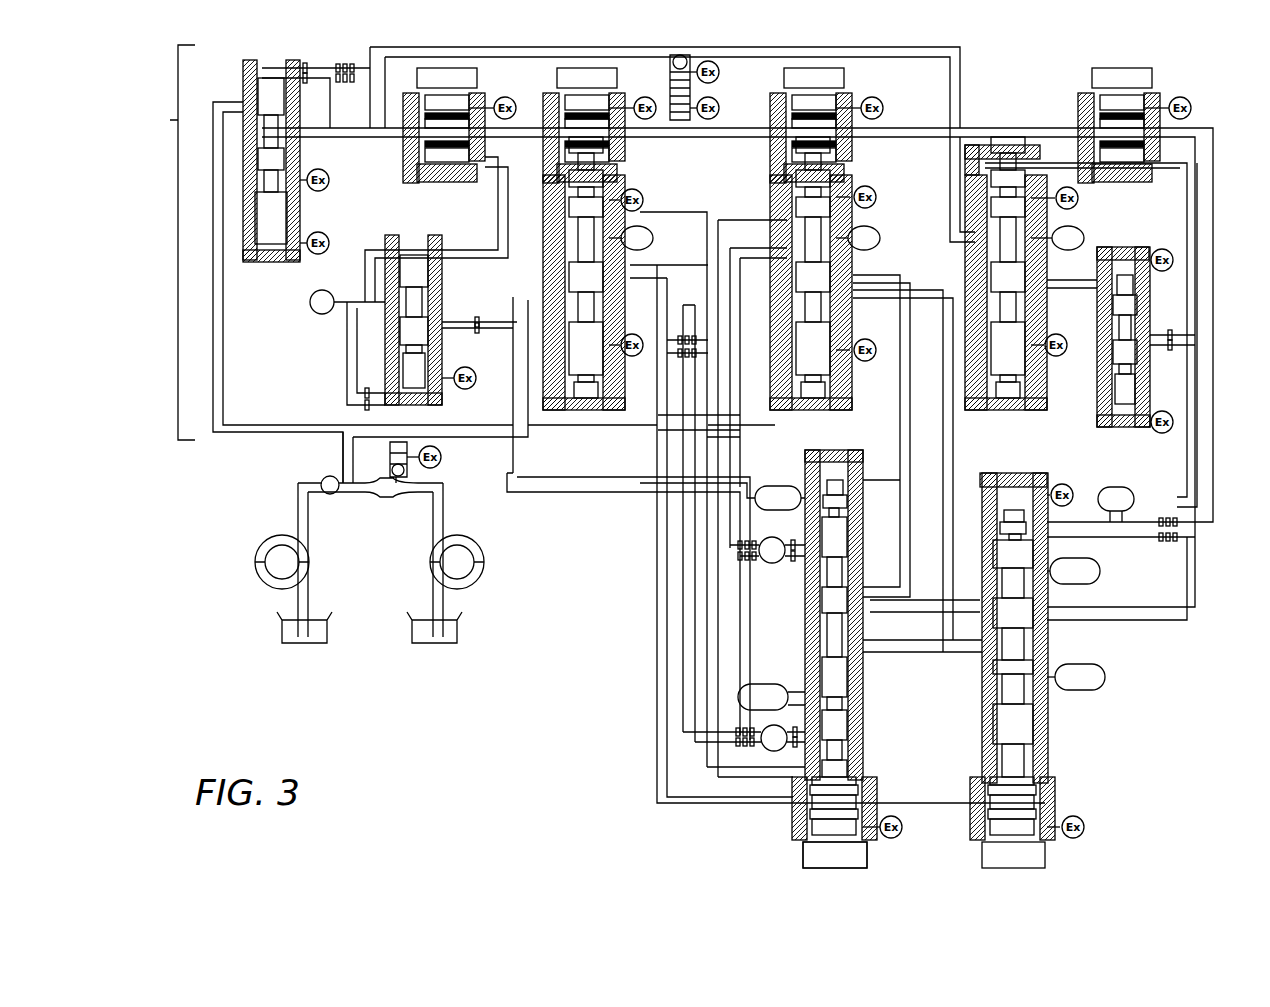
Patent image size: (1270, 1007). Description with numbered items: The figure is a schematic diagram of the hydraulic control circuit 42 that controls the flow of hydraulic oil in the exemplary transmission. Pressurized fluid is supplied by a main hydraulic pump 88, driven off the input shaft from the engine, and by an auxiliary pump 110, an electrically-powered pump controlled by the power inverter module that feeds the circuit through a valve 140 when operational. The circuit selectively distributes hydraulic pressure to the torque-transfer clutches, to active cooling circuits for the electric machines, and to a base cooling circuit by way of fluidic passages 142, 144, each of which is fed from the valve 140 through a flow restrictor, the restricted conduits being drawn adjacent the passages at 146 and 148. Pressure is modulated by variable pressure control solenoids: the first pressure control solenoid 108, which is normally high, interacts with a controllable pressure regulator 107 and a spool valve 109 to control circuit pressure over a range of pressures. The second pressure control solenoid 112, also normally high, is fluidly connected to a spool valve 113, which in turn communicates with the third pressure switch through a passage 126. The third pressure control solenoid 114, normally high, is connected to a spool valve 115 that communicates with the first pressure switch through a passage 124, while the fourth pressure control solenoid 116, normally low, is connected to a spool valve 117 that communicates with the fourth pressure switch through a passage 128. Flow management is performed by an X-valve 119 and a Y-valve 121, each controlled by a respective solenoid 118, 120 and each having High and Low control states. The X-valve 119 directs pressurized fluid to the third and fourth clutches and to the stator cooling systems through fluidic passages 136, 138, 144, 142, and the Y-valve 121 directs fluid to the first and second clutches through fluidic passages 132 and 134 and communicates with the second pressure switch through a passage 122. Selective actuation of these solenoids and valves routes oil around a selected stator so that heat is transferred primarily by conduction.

The hydraulic control circuit 42 is at (170, 120).
The main hydraulic pump 88 is at (465, 585).
The controllable pressure regulator 107 is at (272, 262).
The pressure control solenoid PCS1 108 is at (430, 68).
The spool valve 109 is at (450, 270).
The auxiliary pump 110 is at (275, 585).
The pressure control solenoid PCS2 112 is at (1100, 68).
The spool valve 113 is at (1012, 270).
The pressure control solenoid PCS3 114 is at (795, 68).
The spool valve 115 is at (800, 180).
The pressure control solenoid PCS4 116 is at (570, 68).
The spool valve 117 is at (578, 228).
The solenoid 118 is at (815, 862).
The X-valve 119 is at (822, 622).
The solenoid 120 is at (995, 862).
The Y-valve 121 is at (1020, 728).
The passage 122 is at (1122, 487).
The passage 124 is at (872, 226).
The passage 126 is at (1078, 226).
The passage 128 is at (645, 226).
The fluidic passage 132 is at (1105, 680).
The fluidic passage 134 is at (1100, 574).
The fluidic passage 136 is at (745, 684).
The fluidic passage 138 is at (775, 486).
The valve 140 is at (322, 480).
The fluidic passage 142 is at (770, 752).
The fluidic passage 144 is at (770, 563).
The orifice 146 is at (740, 560).
The orifice 148 is at (735, 750).